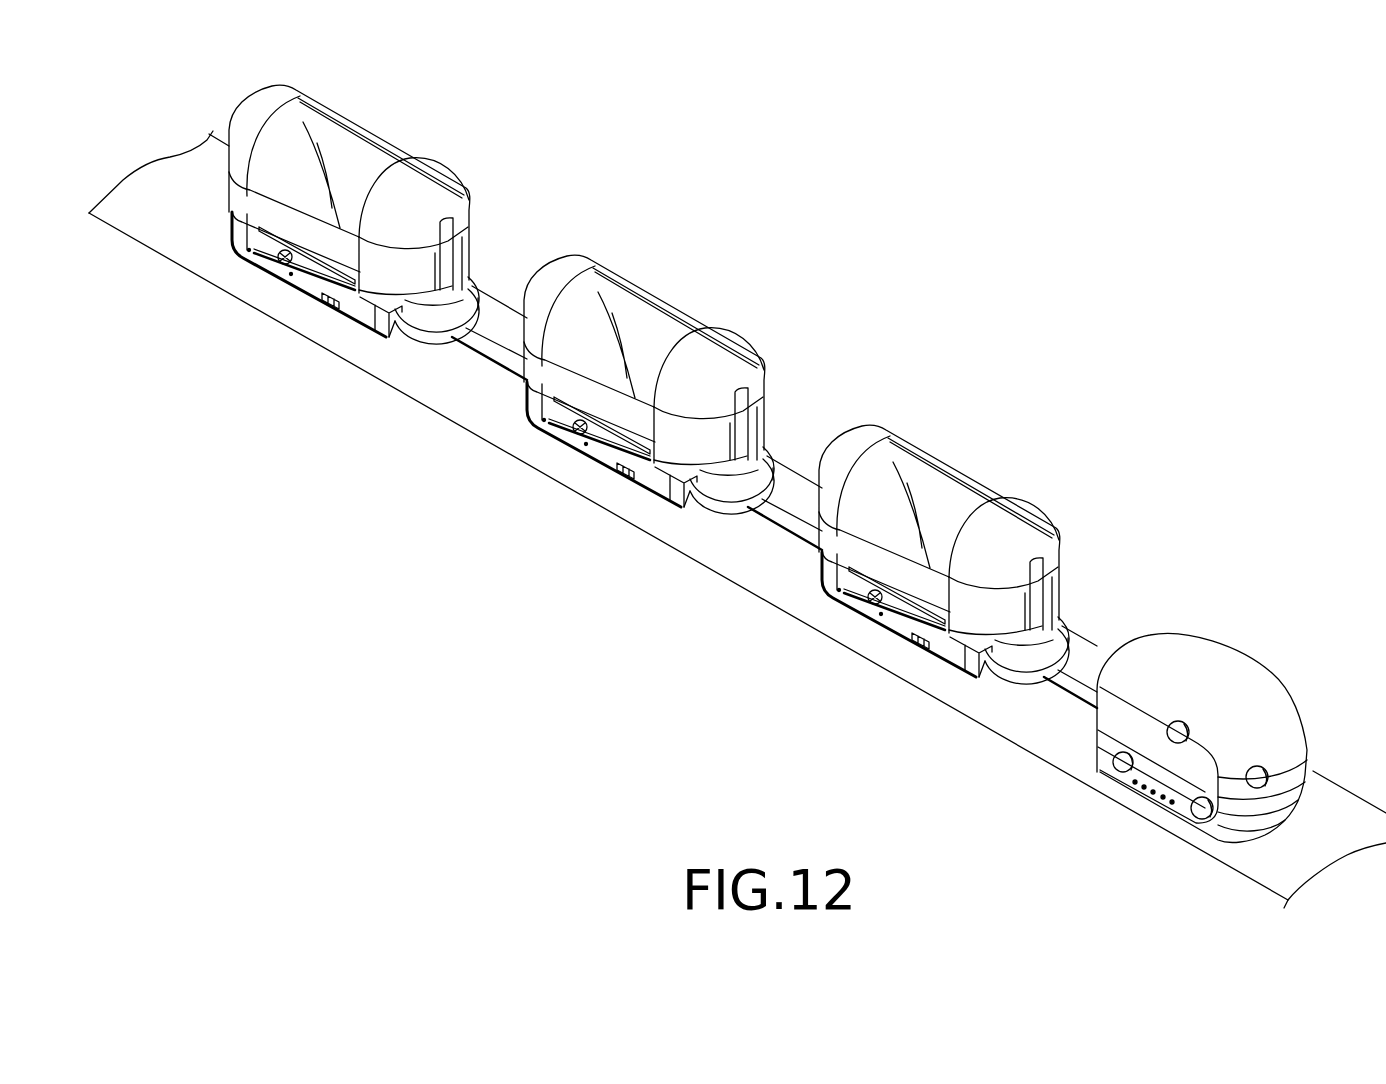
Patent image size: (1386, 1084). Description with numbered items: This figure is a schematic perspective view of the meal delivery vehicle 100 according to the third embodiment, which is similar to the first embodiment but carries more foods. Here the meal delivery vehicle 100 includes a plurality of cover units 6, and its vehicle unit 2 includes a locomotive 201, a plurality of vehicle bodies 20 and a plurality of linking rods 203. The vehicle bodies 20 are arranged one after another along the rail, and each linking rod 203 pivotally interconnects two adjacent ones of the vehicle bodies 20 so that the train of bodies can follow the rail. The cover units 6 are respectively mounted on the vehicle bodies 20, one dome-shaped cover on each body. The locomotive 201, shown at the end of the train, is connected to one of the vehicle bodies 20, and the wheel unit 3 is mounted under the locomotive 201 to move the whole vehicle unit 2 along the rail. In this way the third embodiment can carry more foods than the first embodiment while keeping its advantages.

The meal delivery vehicle 100 is at (1115, 441).
The linking rod 203 is at (490, 342).
The cover unit 6 is at (351, 95).
The vehicle body 20 is at (355, 303).
The vehicle unit 2 is at (1239, 731).
The locomotive 201 is at (1238, 650).
The wheel unit 3 is at (1290, 772).